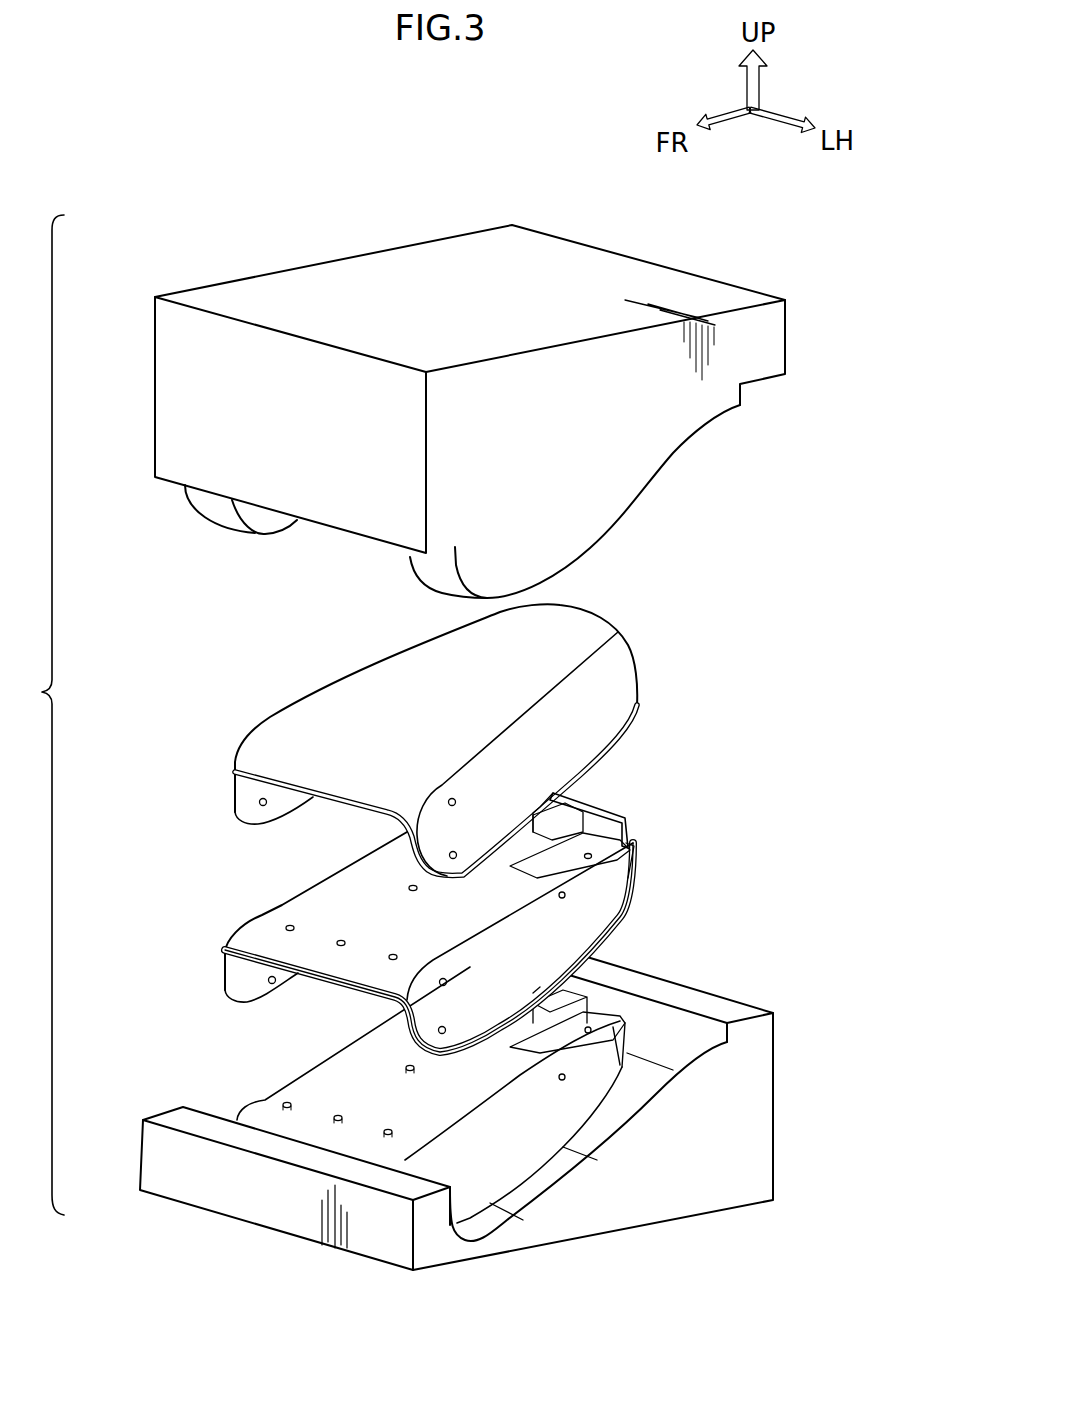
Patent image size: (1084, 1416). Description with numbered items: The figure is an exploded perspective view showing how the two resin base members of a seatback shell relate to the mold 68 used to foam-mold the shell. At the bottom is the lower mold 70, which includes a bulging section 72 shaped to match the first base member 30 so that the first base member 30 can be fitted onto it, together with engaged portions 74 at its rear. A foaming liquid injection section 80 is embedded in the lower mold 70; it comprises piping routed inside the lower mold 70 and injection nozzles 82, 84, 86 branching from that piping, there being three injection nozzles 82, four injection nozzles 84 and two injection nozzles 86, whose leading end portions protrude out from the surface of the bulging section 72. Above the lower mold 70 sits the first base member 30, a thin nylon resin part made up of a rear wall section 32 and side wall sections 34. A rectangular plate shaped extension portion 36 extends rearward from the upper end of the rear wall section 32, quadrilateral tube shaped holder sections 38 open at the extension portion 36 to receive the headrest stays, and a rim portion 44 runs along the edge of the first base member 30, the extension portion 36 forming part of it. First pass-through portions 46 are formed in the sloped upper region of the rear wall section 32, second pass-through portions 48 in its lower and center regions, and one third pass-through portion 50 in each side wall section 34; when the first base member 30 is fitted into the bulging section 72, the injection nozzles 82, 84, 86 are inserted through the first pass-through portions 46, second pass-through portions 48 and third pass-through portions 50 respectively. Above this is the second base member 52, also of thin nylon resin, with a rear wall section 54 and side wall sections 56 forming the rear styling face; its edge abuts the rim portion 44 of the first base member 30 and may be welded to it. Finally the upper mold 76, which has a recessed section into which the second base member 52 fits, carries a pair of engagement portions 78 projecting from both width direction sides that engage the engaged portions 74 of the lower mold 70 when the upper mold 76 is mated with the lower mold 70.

The first base member 30 is at (477, 848).
The rear wall section 32 is at (419, 965).
The side wall sections 34 is at (252, 990).
The extension portion 36 is at (643, 813).
The holder sections 38 is at (643, 813).
The rim portion 44 is at (625, 932).
The first pass-through portions 46 is at (596, 855).
The second pass-through portions 48 is at (412, 888).
The third pass-through portions 50 is at (562, 895).
The second base member 52 is at (487, 736).
The rear wall section 54 is at (320, 720).
The side wall sections 56 is at (593, 707).
The mold 68 is at (489, 715).
The lower mold 70 is at (489, 1121).
The bulging section 72 is at (517, 1135).
The engaged portions 74 is at (708, 1028).
The upper mold 76 is at (468, 355).
The engagement portions 78 is at (205, 505).
The foaming liquid injection section 80 is at (437, 1124).
The injection nozzles 82 is at (625, 1033).
The injection nozzles 84 is at (410, 1068).
The injection nozzles 86 is at (562, 1077).